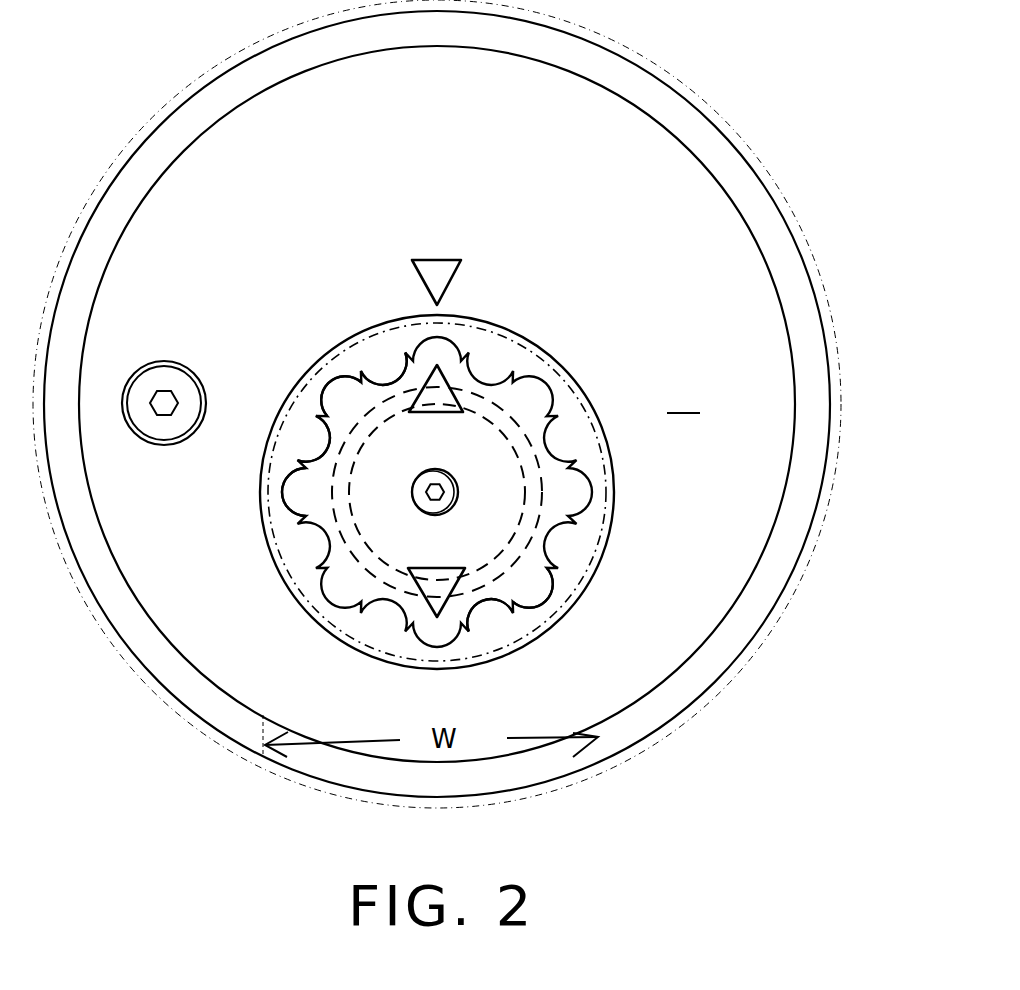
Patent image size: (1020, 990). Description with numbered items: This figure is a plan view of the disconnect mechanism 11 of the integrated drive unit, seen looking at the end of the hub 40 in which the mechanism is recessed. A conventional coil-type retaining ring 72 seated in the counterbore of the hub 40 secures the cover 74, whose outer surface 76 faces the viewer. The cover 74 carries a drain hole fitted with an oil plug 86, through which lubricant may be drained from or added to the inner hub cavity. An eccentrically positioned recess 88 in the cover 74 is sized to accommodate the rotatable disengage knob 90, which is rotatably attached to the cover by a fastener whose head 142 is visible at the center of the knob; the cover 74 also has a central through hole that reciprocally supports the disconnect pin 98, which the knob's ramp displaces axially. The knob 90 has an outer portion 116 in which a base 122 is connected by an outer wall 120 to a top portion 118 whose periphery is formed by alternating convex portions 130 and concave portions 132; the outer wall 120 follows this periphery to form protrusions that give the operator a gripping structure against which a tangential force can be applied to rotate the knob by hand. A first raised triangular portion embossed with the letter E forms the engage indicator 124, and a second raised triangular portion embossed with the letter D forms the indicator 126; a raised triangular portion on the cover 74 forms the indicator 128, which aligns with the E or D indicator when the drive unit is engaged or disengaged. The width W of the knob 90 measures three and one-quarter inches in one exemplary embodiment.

The disconnect mechanism 11 is at (438, 458).
The hub 40 is at (765, 173).
The retaining ring 72 is at (780, 253).
The cover 74 is at (583, 175).
The outer surface 76 is at (683, 399).
The oil plug 86 is at (173, 382).
The recess 88 is at (582, 572).
The disengage knob 90 is at (438, 458).
The disconnect pin 98 is at (443, 422).
The outer portion 116 is at (575, 530).
The top portion 118 is at (530, 592).
The outer wall 120 is at (482, 598).
The base 122 is at (568, 428).
The engage indicator 124 is at (455, 363).
The indicator 126 is at (432, 617).
The indicator 128 is at (436, 256).
The convex portions 130 is at (326, 374).
The concave portions 132 is at (393, 378).
The head 142 is at (447, 503).